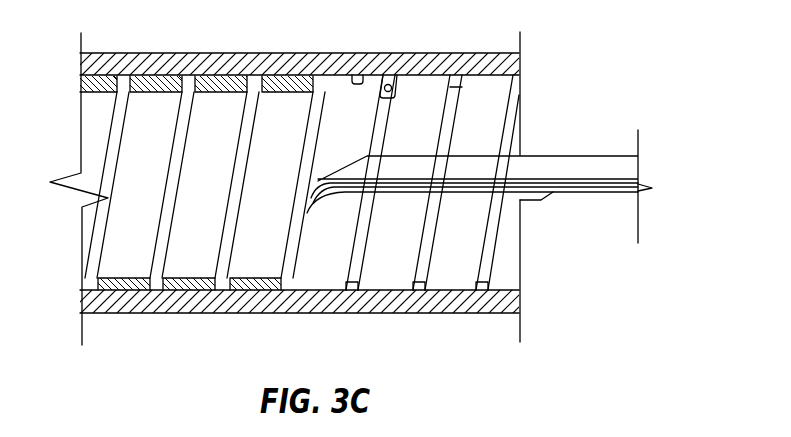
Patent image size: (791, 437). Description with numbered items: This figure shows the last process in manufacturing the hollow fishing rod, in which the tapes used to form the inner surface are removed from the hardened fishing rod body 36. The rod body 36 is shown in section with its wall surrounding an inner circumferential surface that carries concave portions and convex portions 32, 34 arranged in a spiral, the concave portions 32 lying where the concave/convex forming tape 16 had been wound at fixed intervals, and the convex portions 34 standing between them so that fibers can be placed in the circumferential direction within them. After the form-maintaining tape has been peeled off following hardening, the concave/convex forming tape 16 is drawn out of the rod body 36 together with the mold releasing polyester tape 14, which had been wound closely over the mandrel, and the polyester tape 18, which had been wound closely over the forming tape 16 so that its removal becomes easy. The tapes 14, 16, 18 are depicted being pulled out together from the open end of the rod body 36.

The fishing rod body 36 is at (236, 48).
The concave portions 32 is at (352, 73).
The convex portions 34 is at (408, 77).
The polyester tape 18 is at (594, 163).
The concave/convex forming tape 16 is at (600, 190).
The polyester tape for mold releasing 14 is at (553, 193).